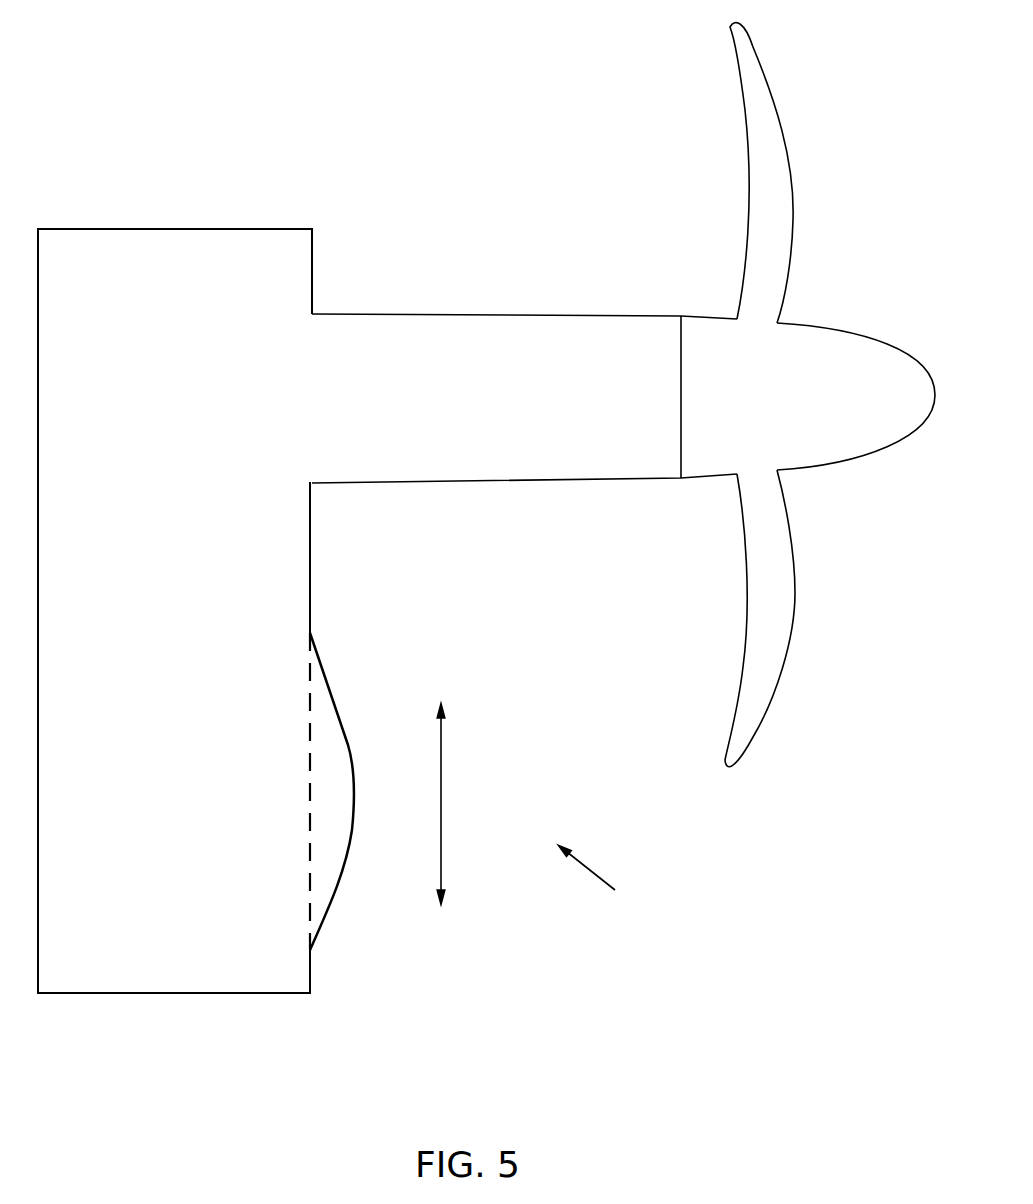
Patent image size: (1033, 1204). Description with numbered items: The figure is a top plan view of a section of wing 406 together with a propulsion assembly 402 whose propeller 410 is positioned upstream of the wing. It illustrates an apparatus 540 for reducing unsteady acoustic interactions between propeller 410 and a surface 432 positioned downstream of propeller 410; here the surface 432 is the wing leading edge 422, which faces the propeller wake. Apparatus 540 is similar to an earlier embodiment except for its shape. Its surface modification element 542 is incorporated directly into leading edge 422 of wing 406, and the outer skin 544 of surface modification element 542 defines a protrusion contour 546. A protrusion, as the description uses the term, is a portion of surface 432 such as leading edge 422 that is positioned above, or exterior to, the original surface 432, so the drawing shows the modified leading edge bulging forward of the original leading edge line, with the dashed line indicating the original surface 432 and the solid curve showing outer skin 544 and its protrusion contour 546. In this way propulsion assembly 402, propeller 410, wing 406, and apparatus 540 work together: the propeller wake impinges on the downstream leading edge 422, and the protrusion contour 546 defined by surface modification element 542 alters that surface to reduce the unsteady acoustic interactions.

The propulsion assembly 402 is at (548, 185).
The wing 406 is at (168, 975).
The propeller 410 is at (737, 720).
The wing leading edge 422 is at (313, 557).
The surface 432 is at (307, 772).
The apparatus 540 is at (608, 876).
The surface modification element 542 is at (342, 746).
The outer skin 544 is at (328, 912).
The protrusion contour 546 is at (441, 792).